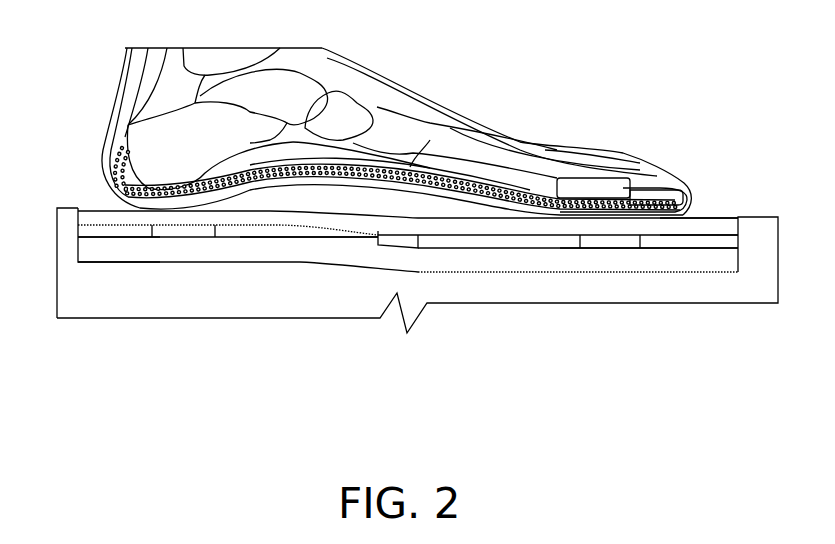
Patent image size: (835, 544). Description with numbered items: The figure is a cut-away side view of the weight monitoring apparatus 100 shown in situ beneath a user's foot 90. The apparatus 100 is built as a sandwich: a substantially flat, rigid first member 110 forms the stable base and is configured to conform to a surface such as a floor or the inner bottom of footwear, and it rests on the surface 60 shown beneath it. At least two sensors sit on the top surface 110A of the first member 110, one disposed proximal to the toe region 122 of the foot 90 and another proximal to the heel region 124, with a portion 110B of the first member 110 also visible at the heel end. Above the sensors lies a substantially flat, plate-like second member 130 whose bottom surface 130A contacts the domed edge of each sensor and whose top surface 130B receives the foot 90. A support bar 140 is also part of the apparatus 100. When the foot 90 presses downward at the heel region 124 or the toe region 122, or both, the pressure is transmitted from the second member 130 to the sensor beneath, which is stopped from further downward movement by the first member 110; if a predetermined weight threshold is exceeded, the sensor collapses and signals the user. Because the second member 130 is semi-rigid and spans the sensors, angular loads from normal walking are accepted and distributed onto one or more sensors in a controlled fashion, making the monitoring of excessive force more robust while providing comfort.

The user's foot 90 is at (441, 110).
The weight monitoring apparatus 100 is at (711, 312).
The base 60 is at (85, 297).
The first member 110 is at (232, 243).
The top surface of the first member 110A is at (305, 237).
The second portion of first layer 110B is at (102, 252).
The heel region 124 is at (178, 232).
The support bar 140 is at (407, 240).
The second member 130 is at (535, 225).
The toe region 122 is at (615, 238).
The bottom surface of the second member 130A is at (720, 235).
The top surface of the second member 130B is at (702, 218).